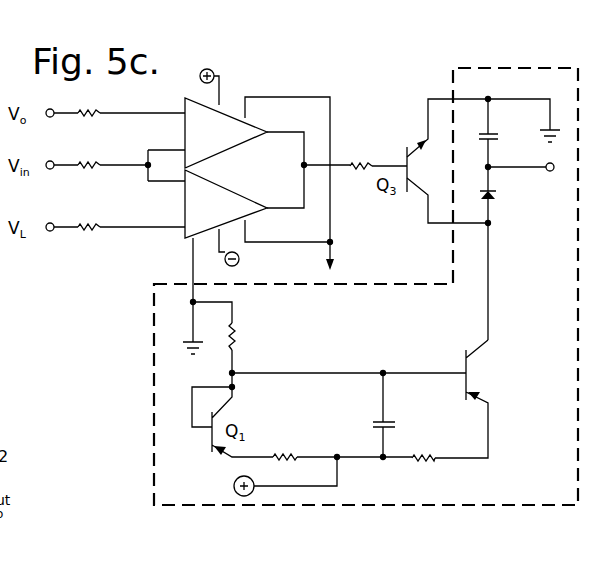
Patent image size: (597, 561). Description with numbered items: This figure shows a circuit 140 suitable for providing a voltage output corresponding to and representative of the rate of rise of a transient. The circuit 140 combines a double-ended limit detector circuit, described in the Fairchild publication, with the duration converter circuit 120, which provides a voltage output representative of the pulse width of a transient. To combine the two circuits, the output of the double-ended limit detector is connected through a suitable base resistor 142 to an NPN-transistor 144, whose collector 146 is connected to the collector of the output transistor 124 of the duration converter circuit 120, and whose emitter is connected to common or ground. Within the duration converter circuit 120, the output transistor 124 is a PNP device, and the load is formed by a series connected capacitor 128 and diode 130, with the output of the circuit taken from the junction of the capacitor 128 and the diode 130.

The circuit 120 is at (140, 386).
The PNP-device 124 is at (492, 338).
The capacitor 128 is at (495, 137).
The diode 130 is at (493, 200).
The circuit 140 is at (357, 74).
The base resistor 142 is at (364, 158).
The NPN-transistor 144 is at (424, 189).
The collector 146 is at (424, 189).